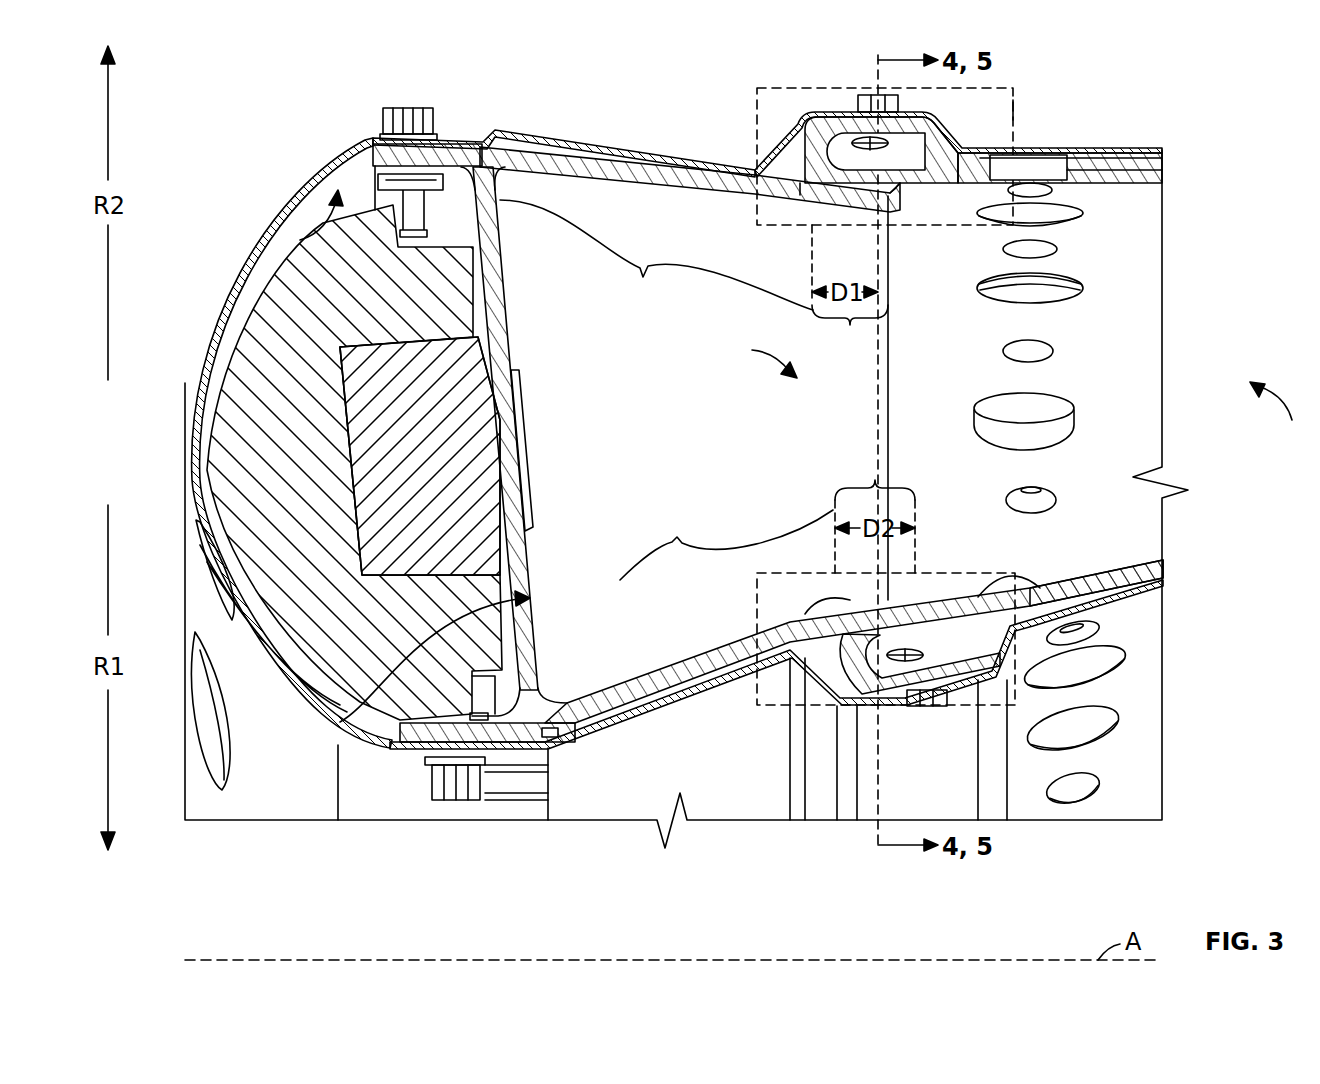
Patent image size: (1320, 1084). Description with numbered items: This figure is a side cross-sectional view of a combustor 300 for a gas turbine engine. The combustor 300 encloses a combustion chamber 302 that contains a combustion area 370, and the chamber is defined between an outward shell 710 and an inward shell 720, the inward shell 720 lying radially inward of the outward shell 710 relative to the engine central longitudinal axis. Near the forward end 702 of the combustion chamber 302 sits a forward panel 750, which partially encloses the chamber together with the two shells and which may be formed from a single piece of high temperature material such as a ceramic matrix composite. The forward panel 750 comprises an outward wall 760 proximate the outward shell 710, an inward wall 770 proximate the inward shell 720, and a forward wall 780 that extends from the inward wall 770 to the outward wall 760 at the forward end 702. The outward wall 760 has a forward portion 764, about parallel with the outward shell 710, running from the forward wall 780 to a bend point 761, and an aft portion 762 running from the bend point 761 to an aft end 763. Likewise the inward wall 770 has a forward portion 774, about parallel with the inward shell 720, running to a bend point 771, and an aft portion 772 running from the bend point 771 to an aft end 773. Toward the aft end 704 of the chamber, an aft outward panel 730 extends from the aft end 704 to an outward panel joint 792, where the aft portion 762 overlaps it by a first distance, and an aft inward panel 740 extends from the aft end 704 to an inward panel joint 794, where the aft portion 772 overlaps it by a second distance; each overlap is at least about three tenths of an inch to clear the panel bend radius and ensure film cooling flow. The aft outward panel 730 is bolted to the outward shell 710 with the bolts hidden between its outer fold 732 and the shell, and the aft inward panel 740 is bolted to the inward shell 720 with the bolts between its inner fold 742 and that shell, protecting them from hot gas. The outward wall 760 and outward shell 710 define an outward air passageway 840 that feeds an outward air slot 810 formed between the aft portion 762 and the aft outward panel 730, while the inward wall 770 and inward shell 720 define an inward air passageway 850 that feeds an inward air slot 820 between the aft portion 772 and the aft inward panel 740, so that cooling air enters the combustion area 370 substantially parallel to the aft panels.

The combustor 300 is at (1002, 90).
The combustion chamber 302 is at (686, 499).
The combustion area 370 is at (751, 358).
The forward end 702 is at (337, 735).
The aft end 704 is at (1280, 417).
The outward shell 710 is at (620, 160).
The inward shell 720 is at (573, 740).
The aft outward panel 730 is at (1163, 170).
The outer fold 732 is at (847, 127).
The aft inward panel 740 is at (1160, 568).
The inner fold 742 is at (900, 705).
The forward panel 750 is at (482, 142).
The outward wall 760 is at (648, 175).
The bend point 761 is at (807, 210).
The aft portion 762 is at (850, 336).
The aft end 763 is at (892, 197).
The forward portion 764 is at (656, 255).
The inward wall 770 is at (633, 688).
The bend point 771 is at (837, 602).
The aft portion 772 is at (875, 481).
The aft end 773 is at (920, 600).
The forward portion 774 is at (726, 543).
The forward wall 780 is at (505, 318).
The outward panel joint 792 is at (1018, 116).
The inward panel joint 794 is at (967, 708).
The outward air slot 810 is at (865, 147).
The inward air slot 820 is at (905, 630).
The outward air passageway 840 is at (510, 137).
The inward air passageway 850 is at (703, 677).